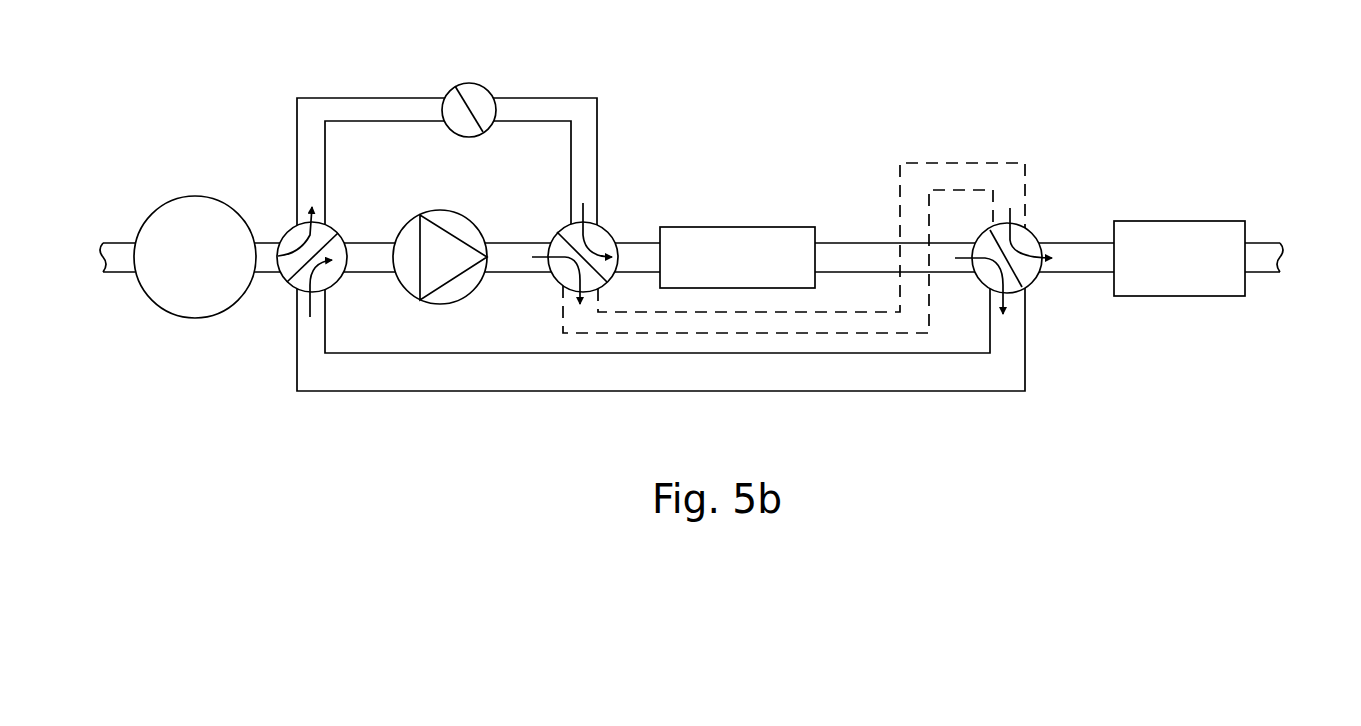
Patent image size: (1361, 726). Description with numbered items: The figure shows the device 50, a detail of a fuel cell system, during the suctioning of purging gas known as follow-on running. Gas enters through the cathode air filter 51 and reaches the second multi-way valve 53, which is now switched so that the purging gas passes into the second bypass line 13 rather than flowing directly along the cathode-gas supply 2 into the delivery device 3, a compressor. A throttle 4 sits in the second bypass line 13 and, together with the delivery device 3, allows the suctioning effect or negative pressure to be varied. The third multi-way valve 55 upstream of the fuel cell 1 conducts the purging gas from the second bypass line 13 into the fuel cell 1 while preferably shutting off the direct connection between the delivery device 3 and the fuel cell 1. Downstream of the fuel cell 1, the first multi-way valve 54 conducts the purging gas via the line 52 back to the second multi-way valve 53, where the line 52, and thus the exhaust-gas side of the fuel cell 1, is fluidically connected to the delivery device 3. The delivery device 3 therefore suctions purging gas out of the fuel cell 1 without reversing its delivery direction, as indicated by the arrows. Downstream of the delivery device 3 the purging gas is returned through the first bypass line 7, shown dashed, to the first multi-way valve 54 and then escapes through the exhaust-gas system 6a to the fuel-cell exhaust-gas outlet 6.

The fuel cell 1 is at (770, 237).
The cathode-gas supply 2 is at (632, 250).
The delivery device 3 is at (460, 290).
The throttle 4 is at (475, 95).
The fuel-cell exhaust-gas outlet 6 is at (1257, 257).
The exhaust-gas system 6a is at (1172, 282).
The first bypass line 7 is at (718, 323).
The second bypass line 13 is at (582, 140).
The device 50 is at (767, 72).
The cathode air filter 51 is at (197, 201).
The line 52 is at (472, 378).
The second multi-way valve 53 is at (287, 282).
The first multi-way valve 54 is at (1027, 277).
The third multi-way valve 55 is at (547, 272).